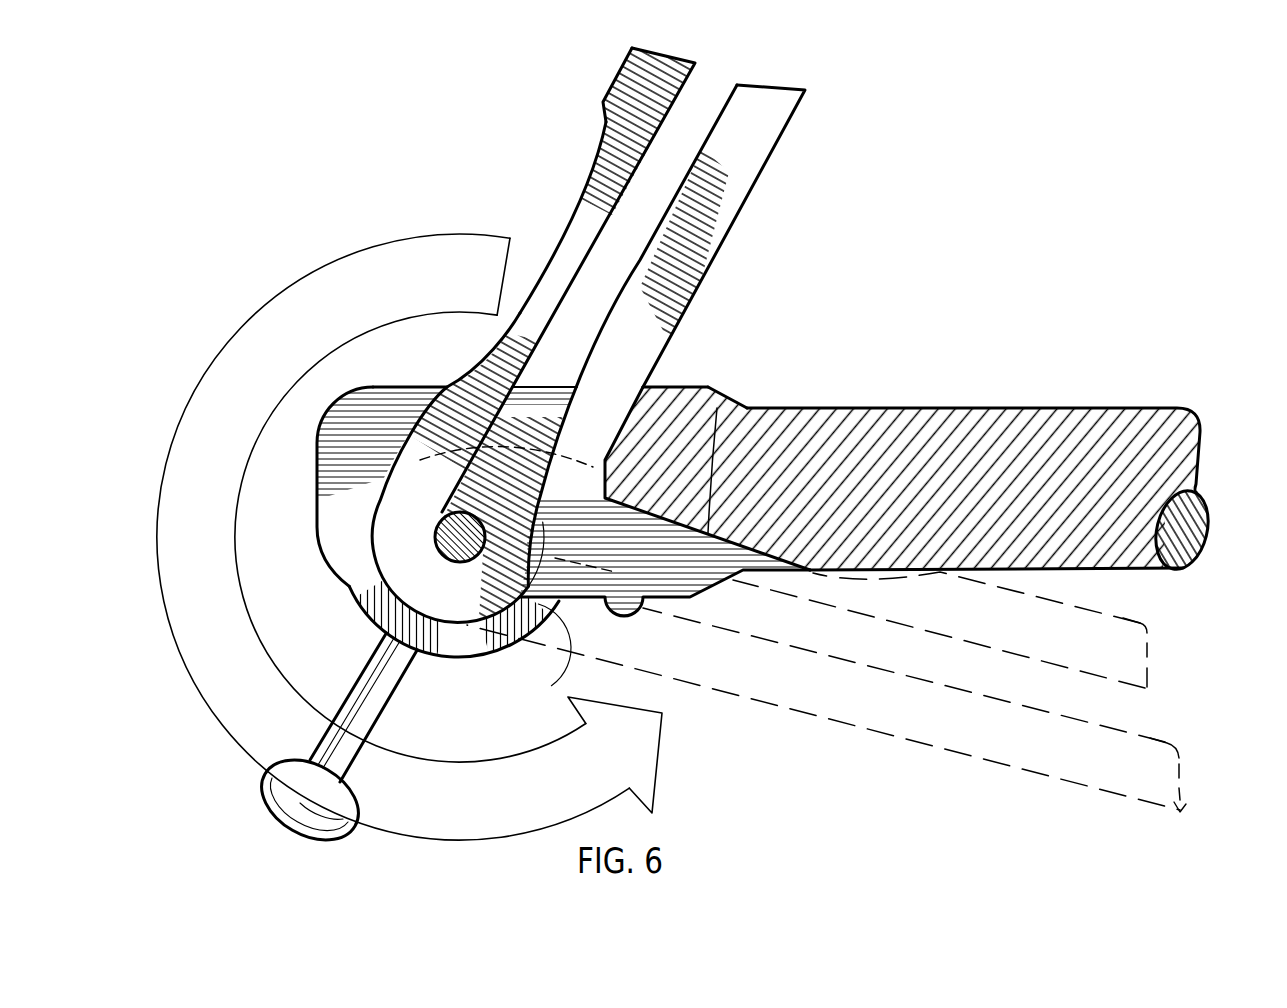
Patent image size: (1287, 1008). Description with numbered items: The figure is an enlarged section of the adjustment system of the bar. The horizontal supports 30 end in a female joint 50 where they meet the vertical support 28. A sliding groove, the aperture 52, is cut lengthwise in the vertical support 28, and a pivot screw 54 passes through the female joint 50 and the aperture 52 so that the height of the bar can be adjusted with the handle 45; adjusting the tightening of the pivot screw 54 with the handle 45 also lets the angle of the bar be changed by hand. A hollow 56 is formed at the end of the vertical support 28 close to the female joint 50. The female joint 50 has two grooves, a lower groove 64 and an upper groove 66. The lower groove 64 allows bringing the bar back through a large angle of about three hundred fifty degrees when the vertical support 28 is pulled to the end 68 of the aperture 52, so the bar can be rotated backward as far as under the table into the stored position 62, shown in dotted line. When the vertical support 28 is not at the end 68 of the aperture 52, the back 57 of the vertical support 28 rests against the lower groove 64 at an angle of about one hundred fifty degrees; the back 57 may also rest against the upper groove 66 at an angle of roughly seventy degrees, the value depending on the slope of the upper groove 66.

The vertical support 28 is at (742, 158).
The horizontal supports 30 is at (945, 425).
The handle 45 is at (263, 795).
The female joint 50 is at (330, 517).
The aperture 52 is at (687, 118).
The pivot screw 54 is at (372, 605).
The hollow 56 is at (590, 166).
The back 57 is at (568, 660).
The stored position 62 is at (1107, 607).
The lower groove 64 is at (722, 404).
The upper groove 66 is at (622, 410).
The end 68 is at (437, 524).